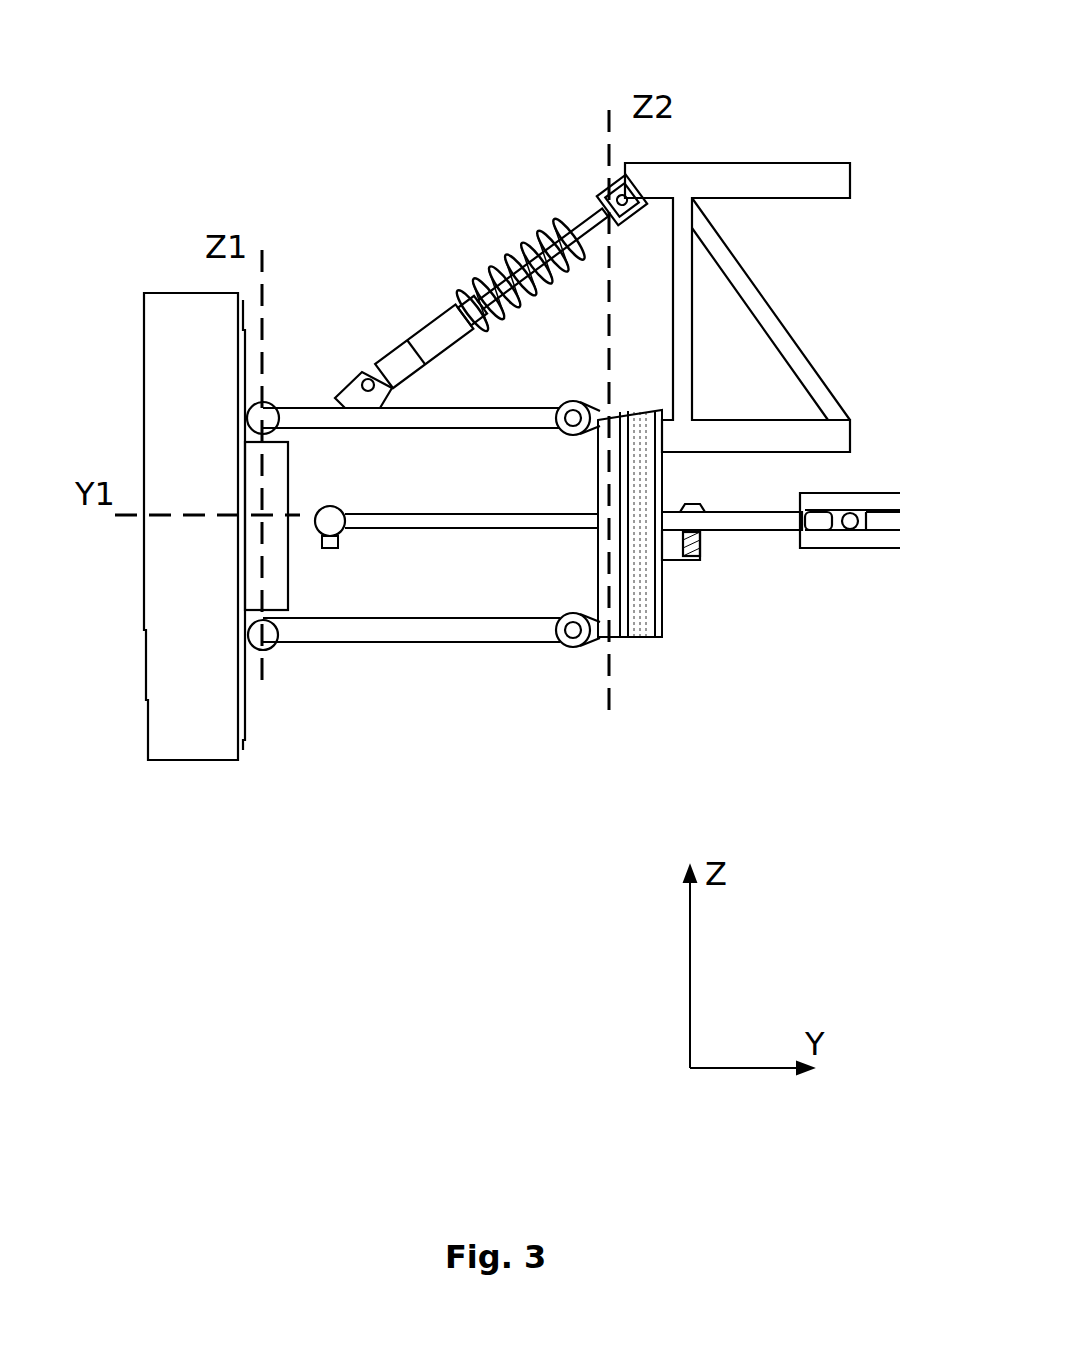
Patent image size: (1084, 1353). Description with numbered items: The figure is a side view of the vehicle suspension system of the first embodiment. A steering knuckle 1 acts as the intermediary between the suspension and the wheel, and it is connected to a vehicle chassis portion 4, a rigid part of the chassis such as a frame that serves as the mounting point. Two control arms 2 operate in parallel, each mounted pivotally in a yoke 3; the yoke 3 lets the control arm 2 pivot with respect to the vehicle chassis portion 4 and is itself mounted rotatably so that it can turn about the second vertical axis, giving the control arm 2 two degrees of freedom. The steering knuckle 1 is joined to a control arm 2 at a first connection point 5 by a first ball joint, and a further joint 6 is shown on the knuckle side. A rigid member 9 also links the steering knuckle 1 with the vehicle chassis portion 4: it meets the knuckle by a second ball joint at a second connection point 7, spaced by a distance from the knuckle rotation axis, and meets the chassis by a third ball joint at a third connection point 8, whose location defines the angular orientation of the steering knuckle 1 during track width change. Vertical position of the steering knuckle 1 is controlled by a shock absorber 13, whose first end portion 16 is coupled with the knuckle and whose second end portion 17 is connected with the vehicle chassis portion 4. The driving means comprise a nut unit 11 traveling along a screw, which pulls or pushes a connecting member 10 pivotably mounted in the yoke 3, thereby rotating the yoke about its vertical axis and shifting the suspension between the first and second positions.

The steering knuckle 1 is at (250, 540).
The control arm 2 is at (385, 412).
The yoke 3 is at (570, 405).
The vehicle chassis portion 4 is at (748, 190).
The first connection point 5 is at (252, 642).
The upper ball joint 6 is at (247, 410).
The second connection point 7 is at (318, 530).
The third connection point 8 is at (690, 560).
The rigid member 9 is at (390, 540).
The connecting member 10 is at (750, 535).
The nut unit 11 is at (855, 500).
The shock absorber 13 is at (535, 235).
The first end portion 16 is at (400, 355).
The second end portion 17 is at (569, 202).